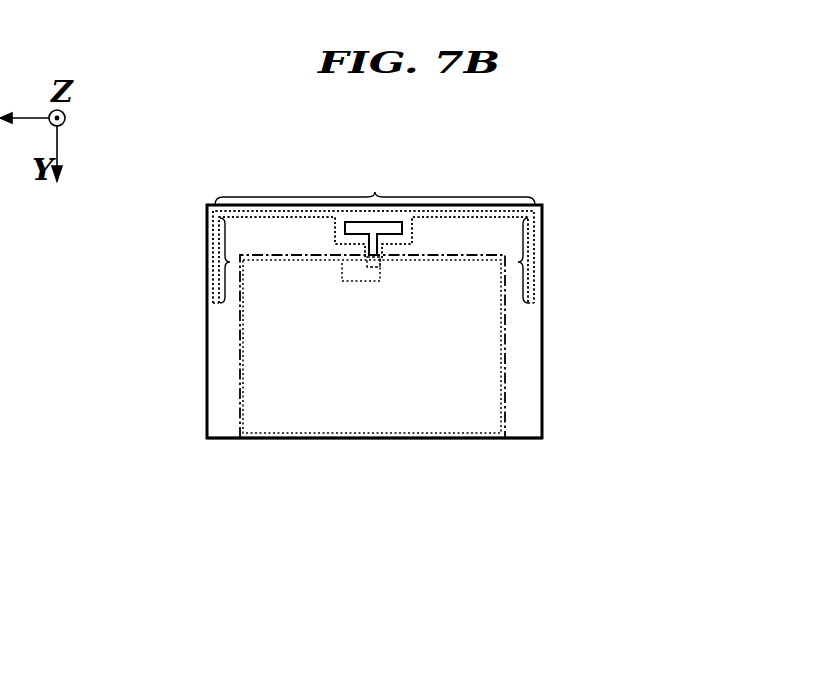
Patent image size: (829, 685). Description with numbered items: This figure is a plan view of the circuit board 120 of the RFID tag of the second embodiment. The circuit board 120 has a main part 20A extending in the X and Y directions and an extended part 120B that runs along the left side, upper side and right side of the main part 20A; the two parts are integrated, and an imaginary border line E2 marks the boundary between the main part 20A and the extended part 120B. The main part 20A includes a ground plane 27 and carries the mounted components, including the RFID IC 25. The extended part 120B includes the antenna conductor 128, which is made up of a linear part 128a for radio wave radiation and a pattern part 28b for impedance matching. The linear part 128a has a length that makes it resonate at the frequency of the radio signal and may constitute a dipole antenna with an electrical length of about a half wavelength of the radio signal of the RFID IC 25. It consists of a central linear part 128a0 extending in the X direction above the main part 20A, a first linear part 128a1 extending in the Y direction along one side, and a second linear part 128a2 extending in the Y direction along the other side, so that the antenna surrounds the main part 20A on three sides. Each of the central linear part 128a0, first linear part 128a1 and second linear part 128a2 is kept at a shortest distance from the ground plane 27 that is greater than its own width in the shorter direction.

The circuit board 120 is at (183, 172).
The extended part 120B is at (527, 407).
The main part 20A is at (455, 439).
The antenna conductor 128 is at (552, 225).
The linear part 128a is at (455, 217).
The central linear part 128a0 is at (375, 181).
The first linear part 128a1 is at (230, 262).
The second linear part 128a2 is at (518, 262).
The border line E2 is at (240, 362).
The ground plane 27 is at (385, 404).
The RFID IC 25 is at (373, 257).
The pattern part 28b is at (357, 244).